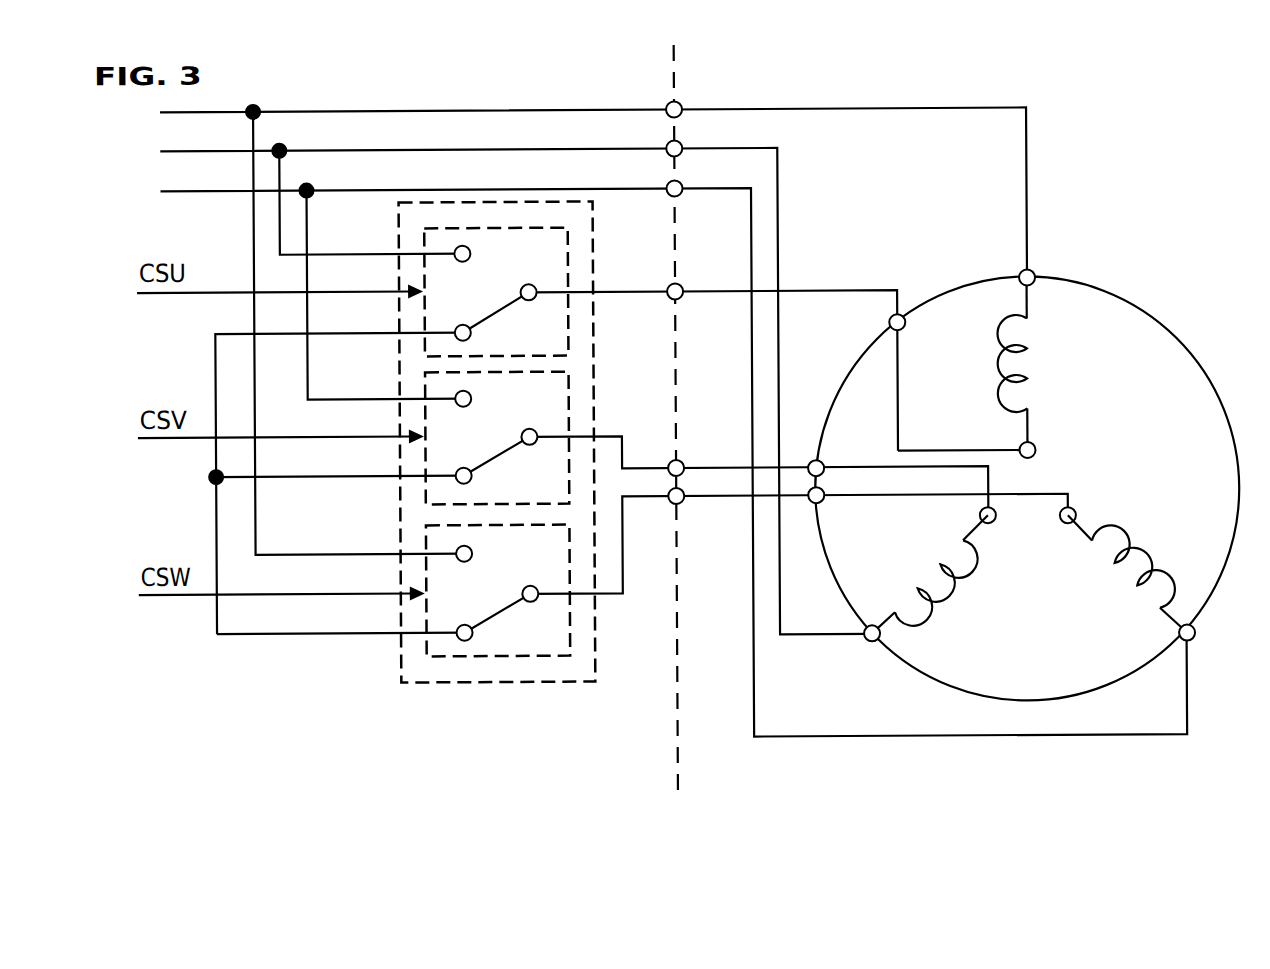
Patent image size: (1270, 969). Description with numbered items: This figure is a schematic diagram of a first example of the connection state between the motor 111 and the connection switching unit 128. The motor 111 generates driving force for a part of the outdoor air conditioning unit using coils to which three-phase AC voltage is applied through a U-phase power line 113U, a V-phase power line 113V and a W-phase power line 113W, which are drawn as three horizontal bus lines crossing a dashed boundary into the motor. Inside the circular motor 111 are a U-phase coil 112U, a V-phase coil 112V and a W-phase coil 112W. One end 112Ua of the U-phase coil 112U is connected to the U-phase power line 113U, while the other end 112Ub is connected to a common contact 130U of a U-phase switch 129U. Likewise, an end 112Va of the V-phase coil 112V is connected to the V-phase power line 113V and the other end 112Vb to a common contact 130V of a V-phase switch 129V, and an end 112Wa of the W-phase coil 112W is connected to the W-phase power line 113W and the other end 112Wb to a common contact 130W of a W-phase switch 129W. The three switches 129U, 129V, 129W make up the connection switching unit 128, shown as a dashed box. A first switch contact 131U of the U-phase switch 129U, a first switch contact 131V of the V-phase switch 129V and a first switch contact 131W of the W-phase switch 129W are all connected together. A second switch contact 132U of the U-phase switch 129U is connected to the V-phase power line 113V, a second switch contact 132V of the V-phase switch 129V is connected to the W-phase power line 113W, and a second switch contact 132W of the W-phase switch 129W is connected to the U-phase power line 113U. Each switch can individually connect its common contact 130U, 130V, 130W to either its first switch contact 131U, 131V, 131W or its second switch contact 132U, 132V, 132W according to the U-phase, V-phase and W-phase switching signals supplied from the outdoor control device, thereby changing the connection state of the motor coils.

The motor 111 is at (1131, 298).
The U-phase coil 112U is at (999, 357).
The end of the U-phase coil 112Ua is at (1035, 270).
The other end of the U-phase coil 112Ub is at (1036, 445).
The V-phase coil 112V is at (952, 604).
The end of the V-phase coil 112Va is at (868, 644).
The other end of the V-phase coil 112Vb is at (997, 522).
The W-phase coil 112W is at (1157, 521).
The end of the W-phase coil 112Wa is at (1178, 633).
The other end of the W-phase coil 112Wb is at (1076, 508).
The U-phase power line 113U is at (947, 104).
The V-phase power line 113V is at (779, 212).
The W-phase power line 113W is at (1017, 735).
The connection switching unit 128 is at (499, 687).
The U-phase switch 129U is at (422, 232).
The V-phase switch 129V is at (421, 375).
The W-phase switch 129W is at (422, 537).
The common contact of the U-phase switch 130U is at (538, 280).
The common contact of the V-phase switch 130V is at (538, 425).
The common contact of the W-phase switch 130W is at (538, 600).
The first switch contact of the U-phase switch 131U is at (472, 333).
The first switch contact of the V-phase switch 131V is at (472, 476).
The first switch contact of the W-phase switch 131W is at (472, 633).
The second switch contact of the U-phase switch 132U is at (472, 254).
The second switch contact of the V-phase switch 132V is at (472, 399).
The second switch contact of the W-phase switch 132W is at (472, 554).